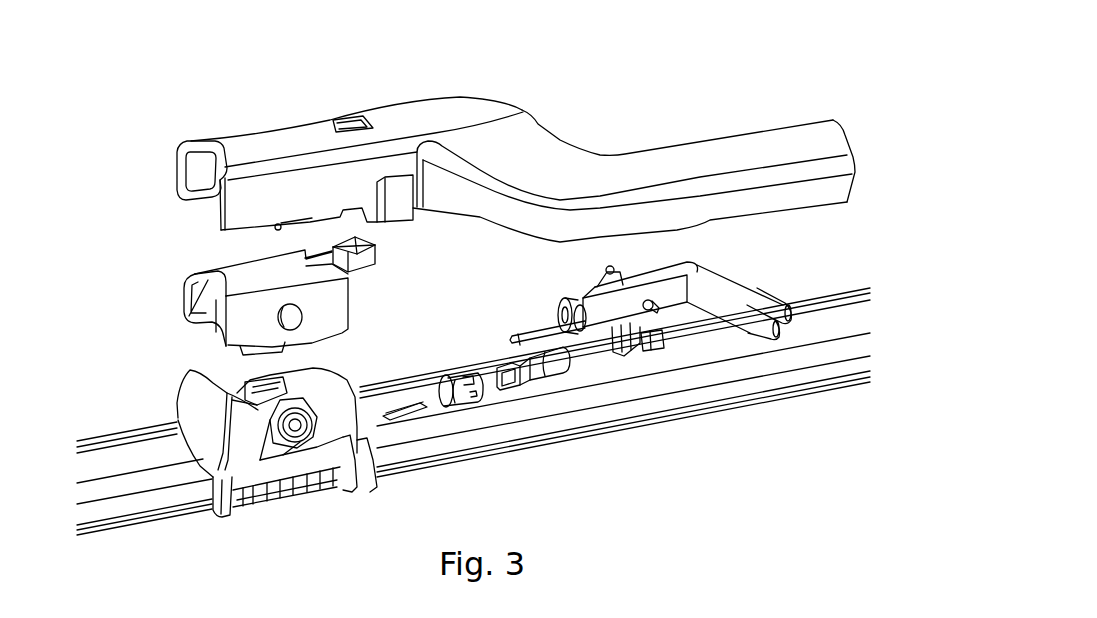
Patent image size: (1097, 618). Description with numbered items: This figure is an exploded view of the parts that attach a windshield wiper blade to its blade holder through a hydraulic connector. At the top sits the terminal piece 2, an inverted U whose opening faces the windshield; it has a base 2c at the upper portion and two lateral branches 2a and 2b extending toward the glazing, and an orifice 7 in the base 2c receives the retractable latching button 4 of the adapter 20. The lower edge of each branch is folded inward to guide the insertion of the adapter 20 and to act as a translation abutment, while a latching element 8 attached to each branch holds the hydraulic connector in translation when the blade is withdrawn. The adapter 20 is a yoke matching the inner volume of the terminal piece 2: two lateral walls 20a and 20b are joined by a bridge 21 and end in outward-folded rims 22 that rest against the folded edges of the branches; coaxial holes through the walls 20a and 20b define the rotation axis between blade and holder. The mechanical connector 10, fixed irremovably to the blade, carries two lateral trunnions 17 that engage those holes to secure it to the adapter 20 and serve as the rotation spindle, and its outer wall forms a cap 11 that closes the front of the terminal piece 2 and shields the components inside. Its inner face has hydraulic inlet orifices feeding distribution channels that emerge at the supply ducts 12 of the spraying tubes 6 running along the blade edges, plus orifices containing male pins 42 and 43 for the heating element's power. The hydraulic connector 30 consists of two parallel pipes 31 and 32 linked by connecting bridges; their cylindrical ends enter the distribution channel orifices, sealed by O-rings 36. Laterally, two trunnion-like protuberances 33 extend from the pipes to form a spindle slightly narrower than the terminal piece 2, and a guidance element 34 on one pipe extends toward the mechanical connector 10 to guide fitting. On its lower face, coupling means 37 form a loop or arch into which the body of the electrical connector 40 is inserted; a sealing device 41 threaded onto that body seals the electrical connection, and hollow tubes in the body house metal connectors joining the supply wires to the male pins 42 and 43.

The terminal piece 2 is at (476, 160).
The lateral branch 2a is at (183, 184).
The lateral branch 2b is at (217, 222).
The base 2c is at (258, 140).
The retractable latching button 4 is at (376, 246).
The tube 6 is at (139, 508).
The orifice 7 is at (358, 117).
The latching element 8 is at (404, 204).
The mechanical connector 10 is at (304, 462).
The cap 11 is at (169, 469).
The supply duct 12 is at (237, 507).
The trunnion 17 is at (293, 432).
The adapter 20 is at (238, 311).
The lateral wall 20a is at (189, 306).
The lateral wall 20b is at (219, 336).
The bridge 21 is at (264, 272).
The rim 22 is at (262, 356).
The hydraulic connector 30 is at (611, 367).
The pipe 31 is at (558, 302).
The pipe 32 is at (589, 336).
The protuberance 33 is at (609, 272).
The guidance element 34 is at (510, 338).
The O-ring 36 is at (612, 356).
The coupling means 37 is at (641, 356).
The electrical connector 40 is at (522, 385).
The sealing device 41 is at (467, 408).
The male pin 42 is at (393, 408).
The male pin 43 is at (400, 426).